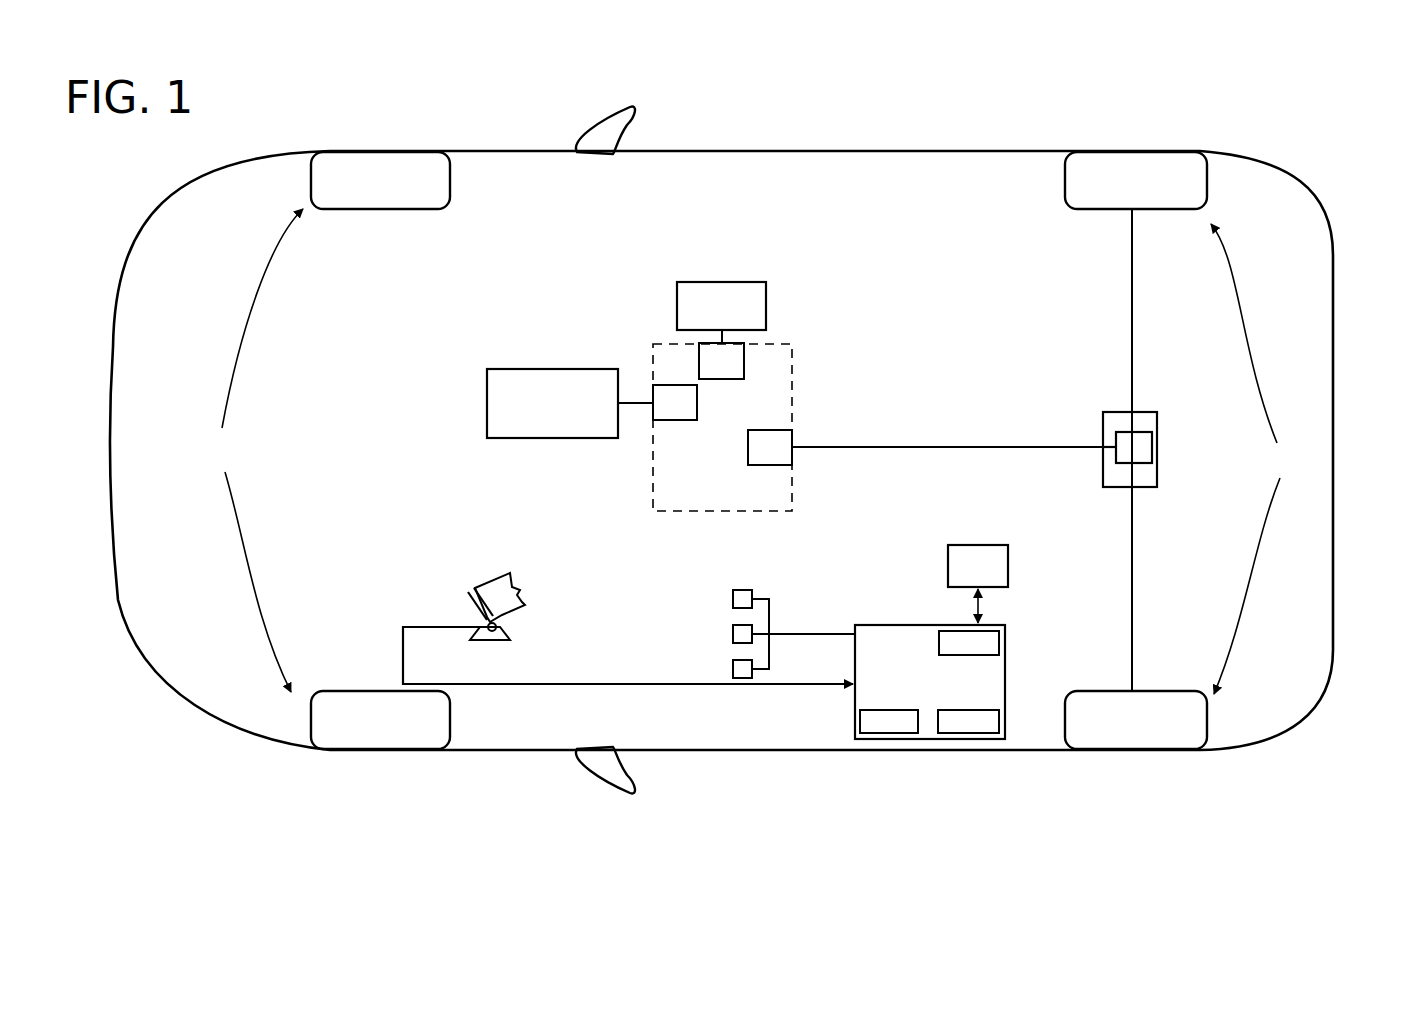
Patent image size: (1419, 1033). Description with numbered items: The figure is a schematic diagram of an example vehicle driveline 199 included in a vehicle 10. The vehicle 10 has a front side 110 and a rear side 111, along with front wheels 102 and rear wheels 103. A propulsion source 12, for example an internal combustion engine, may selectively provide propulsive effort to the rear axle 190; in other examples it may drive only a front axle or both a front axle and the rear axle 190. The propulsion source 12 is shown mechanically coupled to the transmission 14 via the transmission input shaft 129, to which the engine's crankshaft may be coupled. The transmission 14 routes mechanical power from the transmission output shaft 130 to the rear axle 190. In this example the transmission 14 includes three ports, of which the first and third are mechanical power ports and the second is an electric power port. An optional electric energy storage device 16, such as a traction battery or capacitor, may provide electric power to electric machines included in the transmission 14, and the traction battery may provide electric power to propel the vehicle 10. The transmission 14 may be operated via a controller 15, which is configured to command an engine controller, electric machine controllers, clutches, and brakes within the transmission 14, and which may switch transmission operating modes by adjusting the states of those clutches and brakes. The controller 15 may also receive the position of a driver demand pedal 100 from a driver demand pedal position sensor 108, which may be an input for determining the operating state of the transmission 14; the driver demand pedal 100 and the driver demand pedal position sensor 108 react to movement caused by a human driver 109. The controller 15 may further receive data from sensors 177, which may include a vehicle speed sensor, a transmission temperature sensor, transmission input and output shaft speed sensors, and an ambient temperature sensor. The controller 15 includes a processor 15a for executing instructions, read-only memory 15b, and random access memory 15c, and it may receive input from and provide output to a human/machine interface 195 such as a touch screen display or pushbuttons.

The vehicle 10 is at (951, 150).
The propulsion source 12 is at (552, 403).
The transmission 14 is at (806, 321).
The controller 15 is at (930, 682).
The processor 15a is at (889, 722).
The read-only memory 15b is at (968, 722).
The random access memory 15c is at (969, 643).
The electric energy storage device 16 is at (721, 312).
The driver demand pedal 100 is at (518, 606).
The front wheels 102 is at (251, 450).
The rear wheels 103 is at (1258, 459).
The driver demand pedal position sensor 108 is at (500, 624).
The human driver 109 is at (520, 594).
The front side 110 is at (80, 241).
The rear side 111 is at (1379, 184).
The transmission input shaft 129 is at (631, 401).
The transmission output shaft 130 is at (838, 446).
The sensors 177 is at (779, 610).
The rear axle 190 is at (1166, 460).
The human/machine interface 195 is at (978, 584).
The vehicle driveline 199 is at (616, 256).